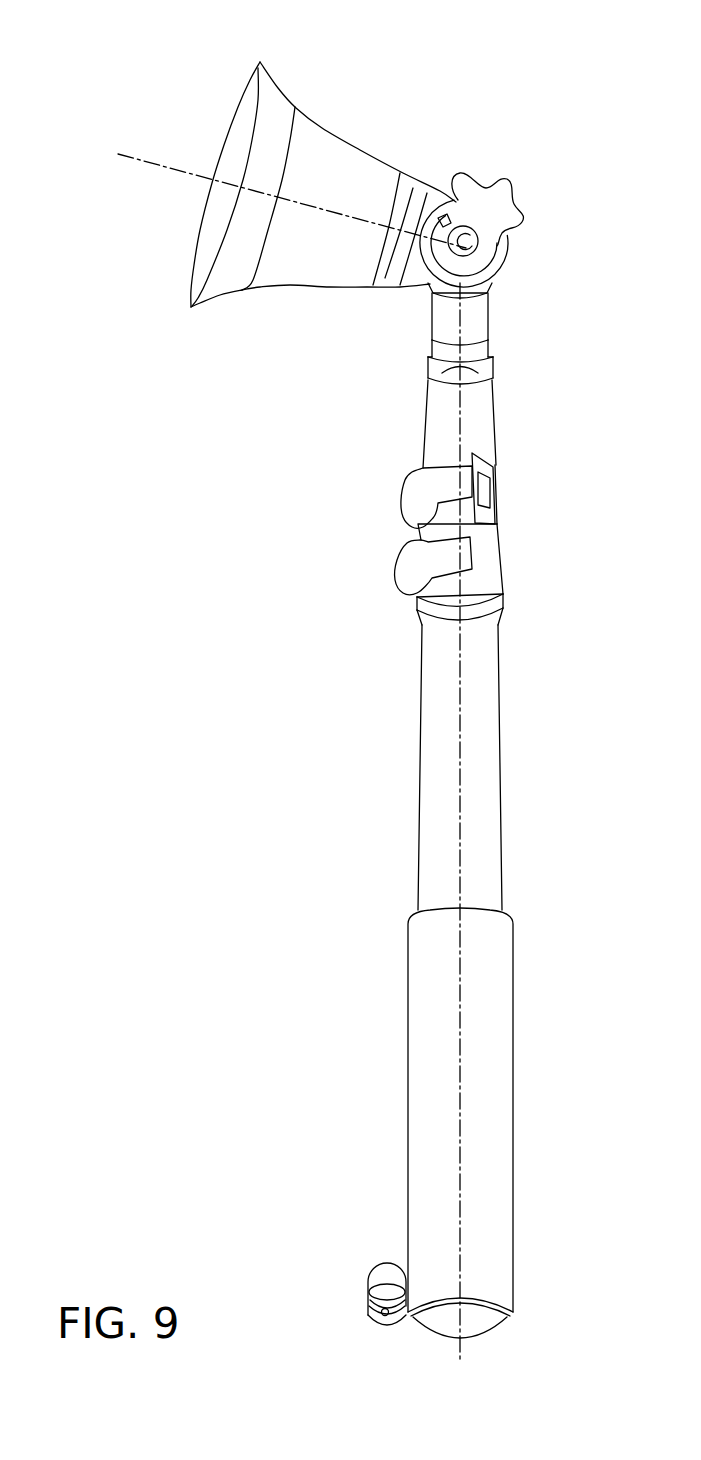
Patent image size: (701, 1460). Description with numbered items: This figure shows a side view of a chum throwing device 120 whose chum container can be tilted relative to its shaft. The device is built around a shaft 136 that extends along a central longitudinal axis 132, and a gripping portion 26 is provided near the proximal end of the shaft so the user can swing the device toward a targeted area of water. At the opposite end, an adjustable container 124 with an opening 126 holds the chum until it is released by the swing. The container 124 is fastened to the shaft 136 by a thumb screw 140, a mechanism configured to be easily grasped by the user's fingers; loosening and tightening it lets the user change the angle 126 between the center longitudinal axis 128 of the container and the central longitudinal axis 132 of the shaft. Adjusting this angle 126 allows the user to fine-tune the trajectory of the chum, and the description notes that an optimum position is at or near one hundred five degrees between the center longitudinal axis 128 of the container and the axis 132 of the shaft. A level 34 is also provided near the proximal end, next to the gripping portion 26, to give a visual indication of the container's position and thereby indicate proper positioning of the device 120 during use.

The chum throwing device 120 is at (250, 703).
The opening 126 is at (195, 101).
The center longitudinal axis 128 is at (158, 162).
The adjustable container 124 is at (413, 157).
The thumb screw 140 is at (509, 202).
The central longitudinal axis 132 is at (462, 333).
The shaft 136 is at (500, 766).
The gripping portion 26 is at (488, 1026).
The level 34 is at (335, 1283).